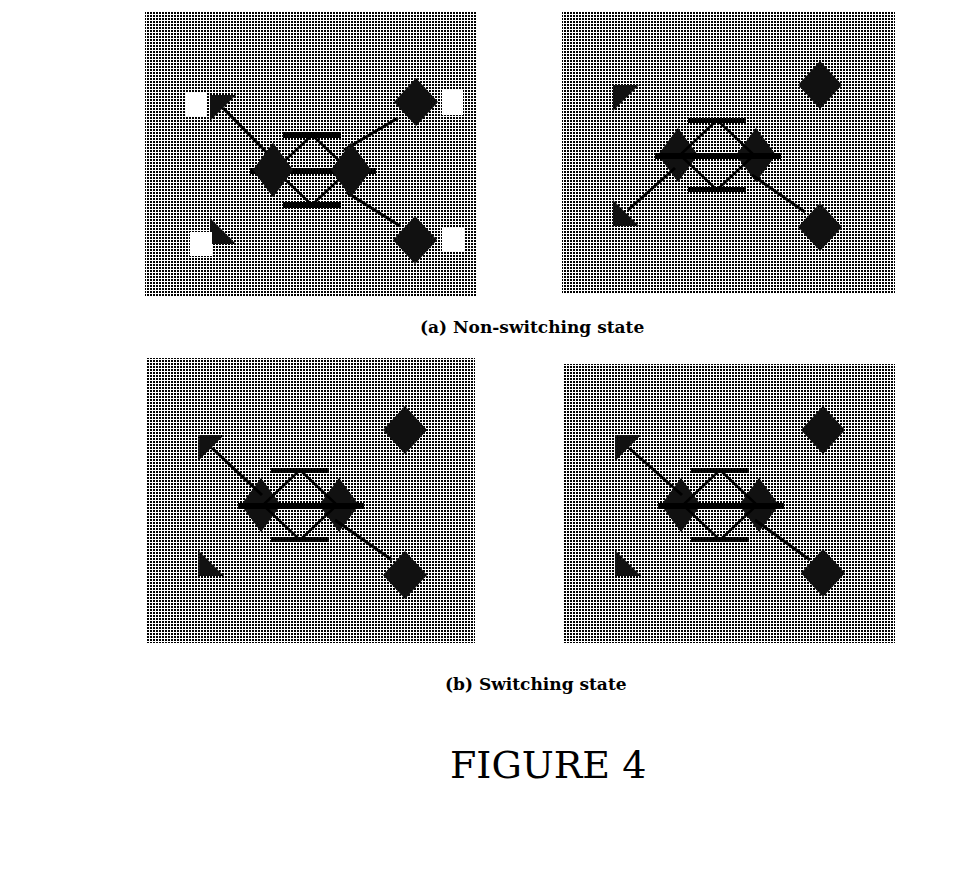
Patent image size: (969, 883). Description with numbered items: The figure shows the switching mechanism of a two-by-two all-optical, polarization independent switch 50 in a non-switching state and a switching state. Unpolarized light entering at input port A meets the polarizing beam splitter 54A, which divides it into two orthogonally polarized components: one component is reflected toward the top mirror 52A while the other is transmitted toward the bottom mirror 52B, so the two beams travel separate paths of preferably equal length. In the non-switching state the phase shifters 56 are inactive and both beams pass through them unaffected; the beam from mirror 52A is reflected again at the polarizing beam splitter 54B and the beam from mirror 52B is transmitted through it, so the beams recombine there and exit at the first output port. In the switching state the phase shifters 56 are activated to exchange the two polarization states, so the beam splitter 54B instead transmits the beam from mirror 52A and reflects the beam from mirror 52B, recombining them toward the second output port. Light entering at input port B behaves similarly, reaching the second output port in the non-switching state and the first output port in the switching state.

The all-optical polarization independent switch 50 is at (110, 172).
The top mirror 52A is at (312, 112).
The bottom mirror 52B is at (314, 225).
The polarizing beam splitter 54A is at (268, 190).
The polarizing beam splitter 54B is at (357, 180).
The phase shifters 56 is at (343, 143).